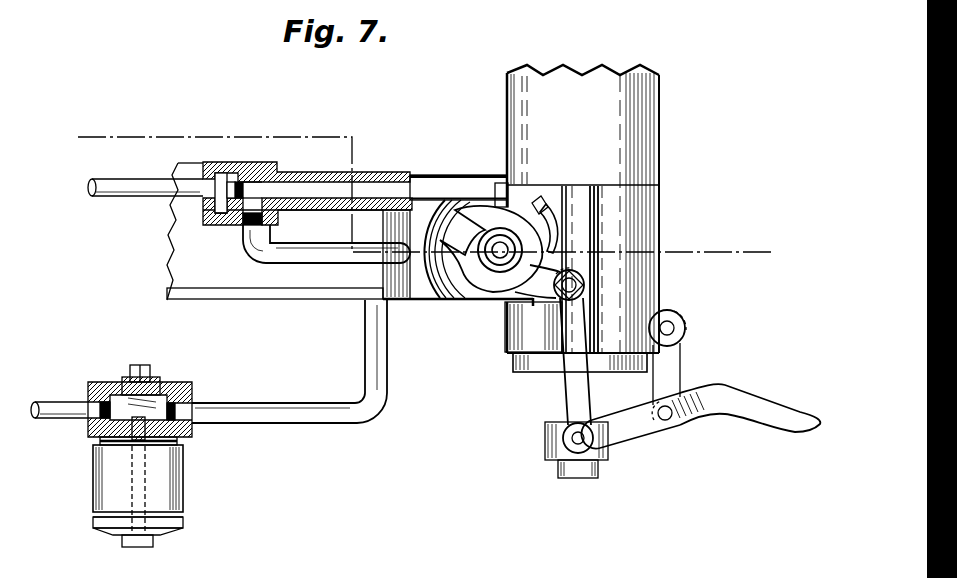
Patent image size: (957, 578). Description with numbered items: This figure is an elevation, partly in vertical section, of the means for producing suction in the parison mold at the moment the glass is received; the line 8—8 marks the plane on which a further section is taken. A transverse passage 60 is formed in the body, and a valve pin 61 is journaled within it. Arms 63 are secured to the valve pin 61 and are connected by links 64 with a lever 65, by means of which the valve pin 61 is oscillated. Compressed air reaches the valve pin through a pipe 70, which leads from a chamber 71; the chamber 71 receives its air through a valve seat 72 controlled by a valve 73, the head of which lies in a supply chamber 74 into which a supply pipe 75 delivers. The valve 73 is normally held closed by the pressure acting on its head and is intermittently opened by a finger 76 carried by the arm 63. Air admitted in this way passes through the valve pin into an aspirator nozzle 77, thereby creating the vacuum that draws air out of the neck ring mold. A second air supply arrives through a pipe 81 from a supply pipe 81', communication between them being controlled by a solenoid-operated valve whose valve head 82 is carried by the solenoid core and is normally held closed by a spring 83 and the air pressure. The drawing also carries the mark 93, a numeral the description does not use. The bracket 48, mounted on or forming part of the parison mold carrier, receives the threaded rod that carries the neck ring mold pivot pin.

The section line 8— 8 is at (75, 120).
The transverse passage 60 is at (648, 143).
The bracket 48 is at (334, 289).
The valve pin 61 is at (498, 245).
The arms 63 is at (528, 275).
The links 64 is at (570, 393).
The lever 65 is at (643, 423).
The pipe 70 is at (316, 262).
The chamber 71 is at (263, 172).
The valve seat 72 is at (232, 173).
The valve 73 is at (228, 214).
The supply chamber 74 is at (203, 222).
The supply pipe 75 is at (148, 192).
The finger 76 is at (547, 198).
The aspirator nozzle 77 is at (497, 263).
The pipe 81 is at (289, 361).
The supply pipe 81' is at (59, 390).
The valve head 82 is at (173, 394).
The spring 83 is at (130, 379).
The cylinder 93 is at (183, 460).